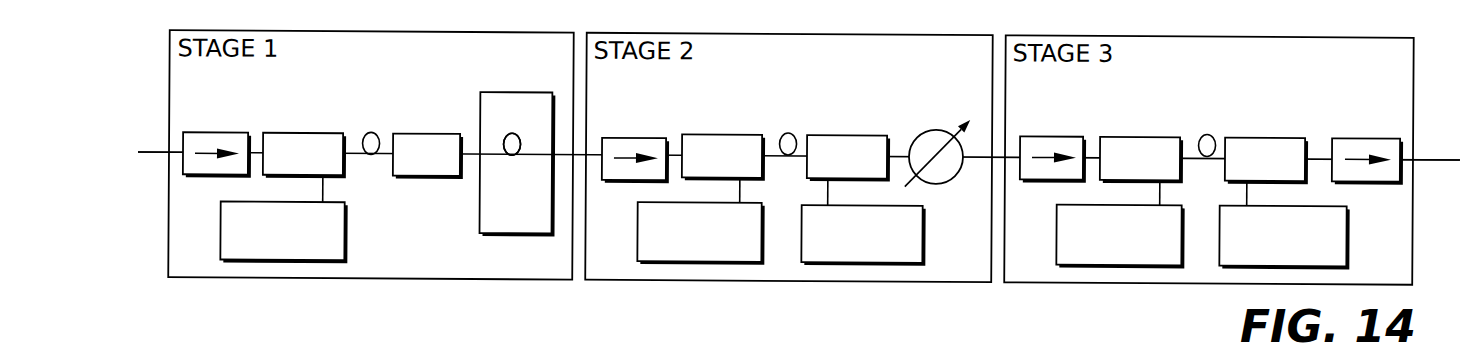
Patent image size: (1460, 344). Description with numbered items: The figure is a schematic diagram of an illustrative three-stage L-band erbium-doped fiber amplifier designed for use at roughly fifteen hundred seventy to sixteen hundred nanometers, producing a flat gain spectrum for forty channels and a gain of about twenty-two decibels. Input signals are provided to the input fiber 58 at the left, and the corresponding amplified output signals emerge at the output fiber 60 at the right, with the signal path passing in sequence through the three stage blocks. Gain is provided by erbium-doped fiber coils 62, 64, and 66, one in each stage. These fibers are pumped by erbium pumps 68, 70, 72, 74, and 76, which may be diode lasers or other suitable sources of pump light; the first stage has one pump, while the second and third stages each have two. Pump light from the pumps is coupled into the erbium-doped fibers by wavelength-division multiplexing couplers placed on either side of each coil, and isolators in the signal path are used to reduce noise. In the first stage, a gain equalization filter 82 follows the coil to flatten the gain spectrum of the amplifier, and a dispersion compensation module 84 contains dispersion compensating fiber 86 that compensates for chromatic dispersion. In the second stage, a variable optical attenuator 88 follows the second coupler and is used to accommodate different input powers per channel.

The input fiber 58 is at (157, 159).
The output fiber 60 is at (1428, 154).
The erbium-doped fiber coil 62 is at (376, 116).
The erbium-doped fiber coil 64 is at (793, 114).
The erbium-doped fiber coil 66 is at (1213, 113).
The erbium pump 68 is at (220, 228).
The erbium pump 70 is at (638, 226).
The erbium pump 72 is at (923, 228).
The erbium pump 74 is at (1057, 222).
The erbium pump 76 is at (1347, 228).
The gain equalization filter 82 is at (426, 131).
The dispersion compensation module 84 is at (511, 90).
The dispersion compensating fiber 86 is at (512, 178).
The variable optical attenuator 88 is at (920, 90).